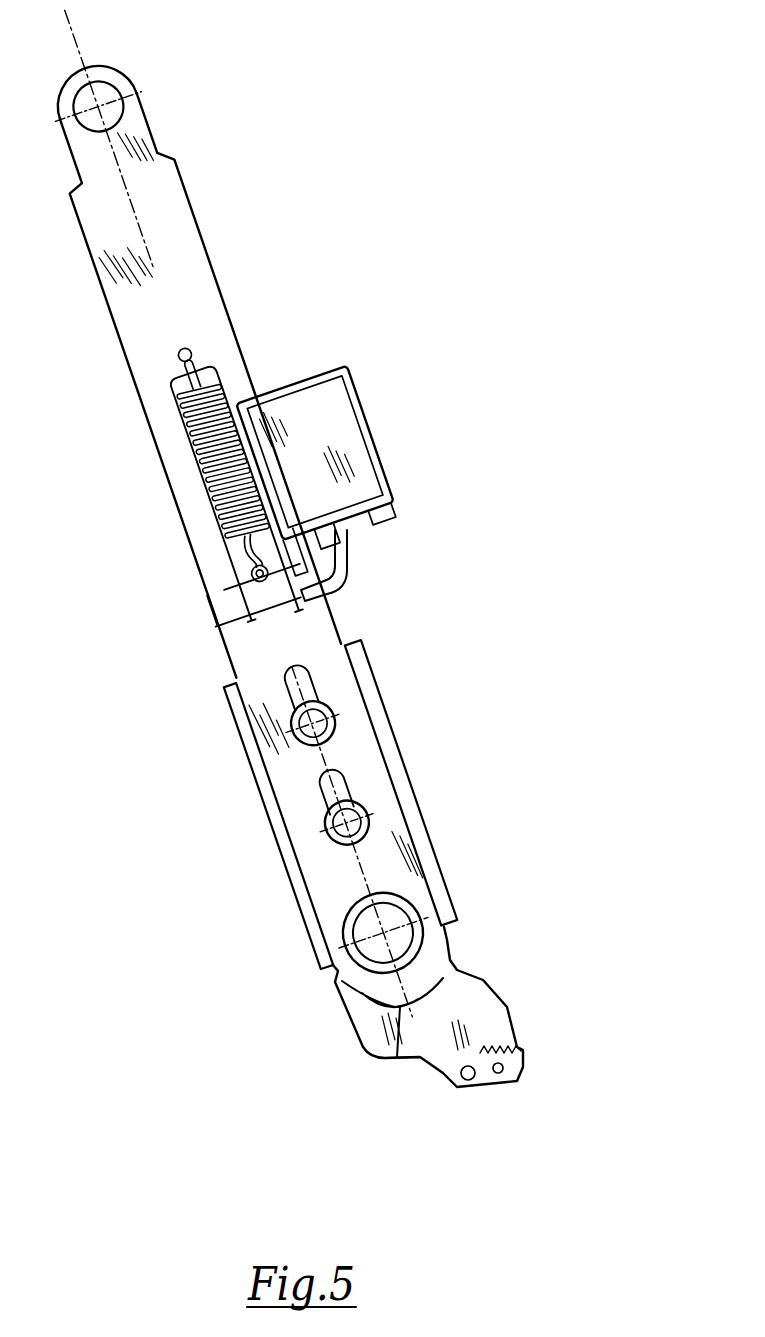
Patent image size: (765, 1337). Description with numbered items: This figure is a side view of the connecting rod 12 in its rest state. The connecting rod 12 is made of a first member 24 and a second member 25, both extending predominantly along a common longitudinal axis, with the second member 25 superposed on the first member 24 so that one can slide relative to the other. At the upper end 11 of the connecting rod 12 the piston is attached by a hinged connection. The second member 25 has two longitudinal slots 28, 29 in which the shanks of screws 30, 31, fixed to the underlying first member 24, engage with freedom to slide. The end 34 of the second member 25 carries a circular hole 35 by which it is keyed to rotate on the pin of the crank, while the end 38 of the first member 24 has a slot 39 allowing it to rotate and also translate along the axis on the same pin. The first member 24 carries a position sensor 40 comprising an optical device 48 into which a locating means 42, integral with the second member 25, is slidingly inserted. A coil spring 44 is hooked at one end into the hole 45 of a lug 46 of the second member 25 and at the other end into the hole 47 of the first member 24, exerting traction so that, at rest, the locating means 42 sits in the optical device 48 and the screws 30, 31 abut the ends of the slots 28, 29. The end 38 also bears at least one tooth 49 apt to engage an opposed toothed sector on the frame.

The end of connecting rod 11 is at (142, 137).
The connecting rod 12 is at (505, 460).
The first member 24 is at (190, 247).
The second member 25 is at (377, 787).
The longitudinal slot 28 is at (285, 682).
The longitudinal slot 29 is at (327, 792).
The screw 30 is at (335, 713).
The screw 31 is at (370, 828).
The end of second member 34 is at (353, 980).
The circular hole 35 is at (347, 925).
The end of first member 38 is at (467, 1000).
The slot 39 is at (397, 1057).
The position sensor 40 is at (330, 430).
The locating means 42 is at (380, 600).
The spring 44 is at (233, 408).
The hole of lug 45 is at (237, 623).
The lug 46 is at (263, 577).
The hole 47 is at (183, 357).
The optical device 48 is at (380, 533).
The tooth 49 is at (523, 1050).